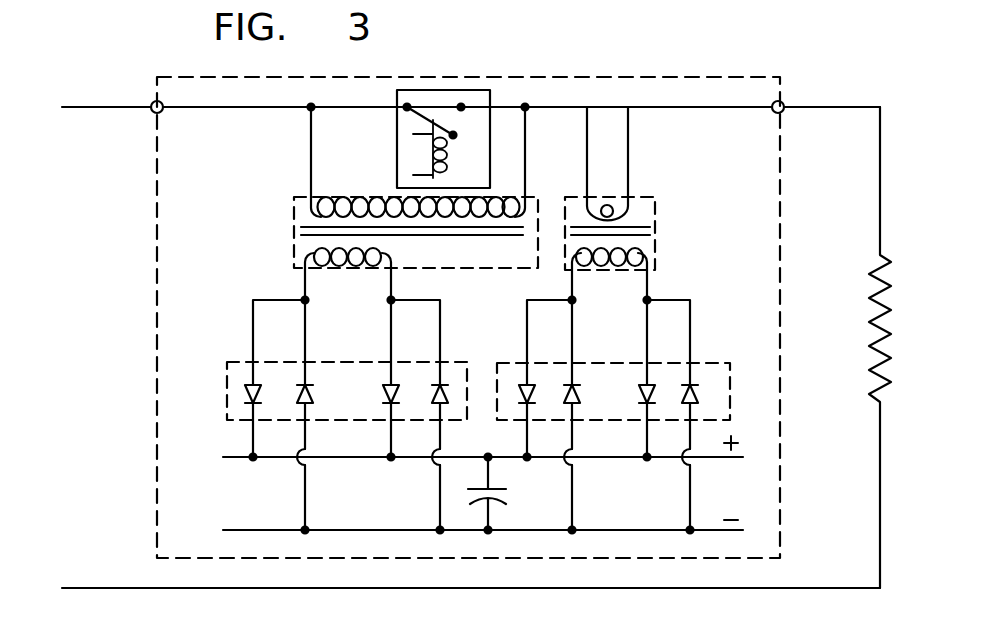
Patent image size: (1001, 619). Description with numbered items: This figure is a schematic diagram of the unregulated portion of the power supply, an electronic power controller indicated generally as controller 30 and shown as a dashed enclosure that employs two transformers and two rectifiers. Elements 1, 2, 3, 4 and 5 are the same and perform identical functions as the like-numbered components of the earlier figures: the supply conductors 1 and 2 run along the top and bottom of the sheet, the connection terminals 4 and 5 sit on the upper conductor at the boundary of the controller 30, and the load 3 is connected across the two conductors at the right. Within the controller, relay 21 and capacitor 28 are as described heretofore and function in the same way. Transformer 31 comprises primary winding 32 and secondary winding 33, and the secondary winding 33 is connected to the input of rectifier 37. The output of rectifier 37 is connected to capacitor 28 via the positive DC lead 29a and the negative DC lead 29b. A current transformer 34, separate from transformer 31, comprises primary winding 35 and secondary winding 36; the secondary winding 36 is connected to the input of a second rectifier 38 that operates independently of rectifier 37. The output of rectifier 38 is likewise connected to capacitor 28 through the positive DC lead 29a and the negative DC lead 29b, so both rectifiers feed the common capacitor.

The power line conductor 1 is at (100, 105).
The power line conductor 2 is at (99, 586).
The load 3 is at (870, 319).
The connection terminal 4 is at (152, 112).
The connection terminal 5 is at (783, 112).
The relay 21 is at (397, 144).
The capacitor 28 is at (495, 500).
The positive DC lead 29a is at (362, 460).
The negative DC lead 29b is at (641, 530).
The electronic power controller 30 is at (157, 372).
The transformer 31 is at (347, 262).
The primary winding 32 is at (345, 205).
The secondary winding 33 is at (305, 248).
The current transformer 34 is at (657, 228).
The primary winding 35 is at (637, 213).
The secondary winding 36 is at (650, 262).
The rectifier 37 is at (227, 395).
The second rectifier 38 is at (730, 400).